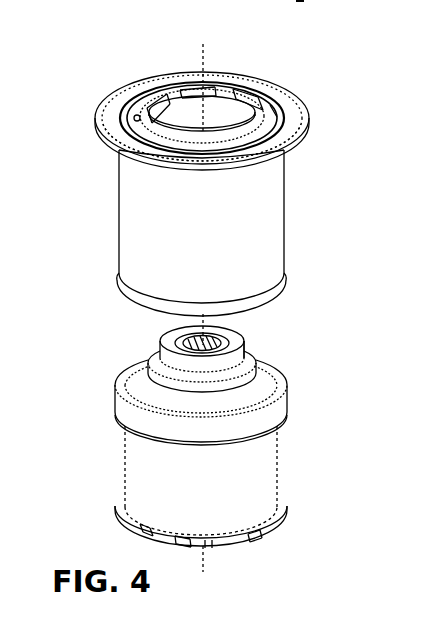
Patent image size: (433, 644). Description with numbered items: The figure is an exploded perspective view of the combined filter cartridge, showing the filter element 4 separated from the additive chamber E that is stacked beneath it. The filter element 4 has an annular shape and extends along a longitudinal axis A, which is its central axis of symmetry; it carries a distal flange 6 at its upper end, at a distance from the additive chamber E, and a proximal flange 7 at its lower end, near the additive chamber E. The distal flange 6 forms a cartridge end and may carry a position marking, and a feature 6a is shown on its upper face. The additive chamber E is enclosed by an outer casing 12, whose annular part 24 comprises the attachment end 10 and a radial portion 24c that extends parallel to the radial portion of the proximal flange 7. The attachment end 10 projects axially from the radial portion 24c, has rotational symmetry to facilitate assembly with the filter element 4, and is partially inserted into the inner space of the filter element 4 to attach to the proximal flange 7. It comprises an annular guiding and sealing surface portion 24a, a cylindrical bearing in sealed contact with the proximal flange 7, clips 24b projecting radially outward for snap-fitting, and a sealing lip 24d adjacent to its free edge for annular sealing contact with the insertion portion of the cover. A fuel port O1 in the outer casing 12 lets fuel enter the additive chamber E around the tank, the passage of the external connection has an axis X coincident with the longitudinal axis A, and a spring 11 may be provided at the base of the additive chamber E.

The filter element 4 is at (107, 223).
The distal flange 6 is at (97, 117).
The slots in flange 6a is at (150, 115).
The proximal flange 7 is at (288, 283).
The attachment end 10 is at (270, 358).
The spring 11 is at (283, 510).
The outer casing 12 is at (268, 480).
The annular part 24 is at (285, 415).
The annular guiding and sealing surface portion 24a is at (150, 378).
The clips 24b is at (160, 358).
The radial portion 24c is at (150, 398).
The sealing lip 24d is at (244, 340).
The fuel port O1 is at (170, 347).
The longitudinal axis A is at (212, 48).
The additive chamber E is at (92, 472).
The axis of the passage X is at (212, 566).